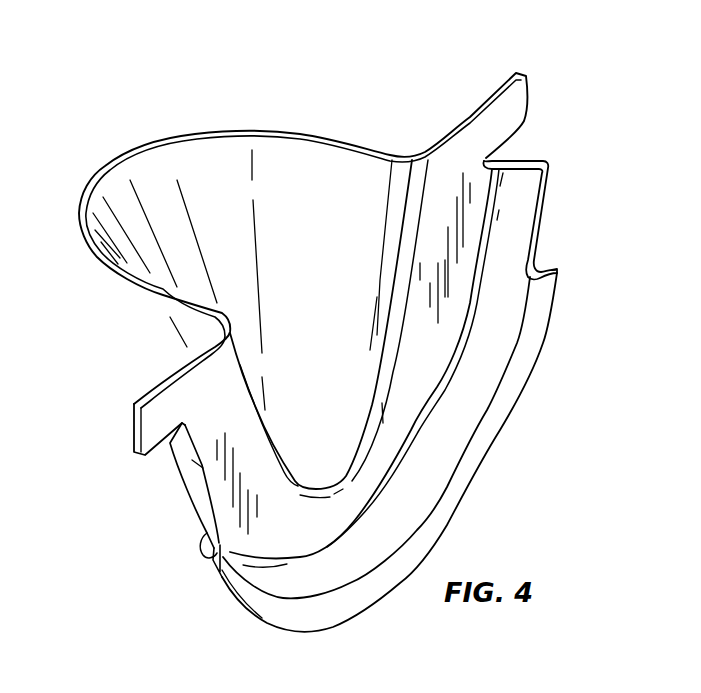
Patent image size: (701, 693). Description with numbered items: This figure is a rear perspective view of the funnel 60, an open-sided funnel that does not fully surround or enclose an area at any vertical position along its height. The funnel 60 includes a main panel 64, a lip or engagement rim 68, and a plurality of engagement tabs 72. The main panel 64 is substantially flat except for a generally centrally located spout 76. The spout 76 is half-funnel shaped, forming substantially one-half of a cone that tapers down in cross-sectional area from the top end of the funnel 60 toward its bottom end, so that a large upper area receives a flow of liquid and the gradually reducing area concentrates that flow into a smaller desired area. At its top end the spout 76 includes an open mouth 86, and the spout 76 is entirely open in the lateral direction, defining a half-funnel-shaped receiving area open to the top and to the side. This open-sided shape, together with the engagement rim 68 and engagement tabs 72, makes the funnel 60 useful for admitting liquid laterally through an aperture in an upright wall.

The funnel 60 is at (126, 123).
The open mouth 86 is at (196, 138).
The spout 76 is at (298, 192).
The engagement tabs 72 is at (508, 106).
The main panel 64 is at (463, 243).
The engagement rim 68 is at (499, 406).